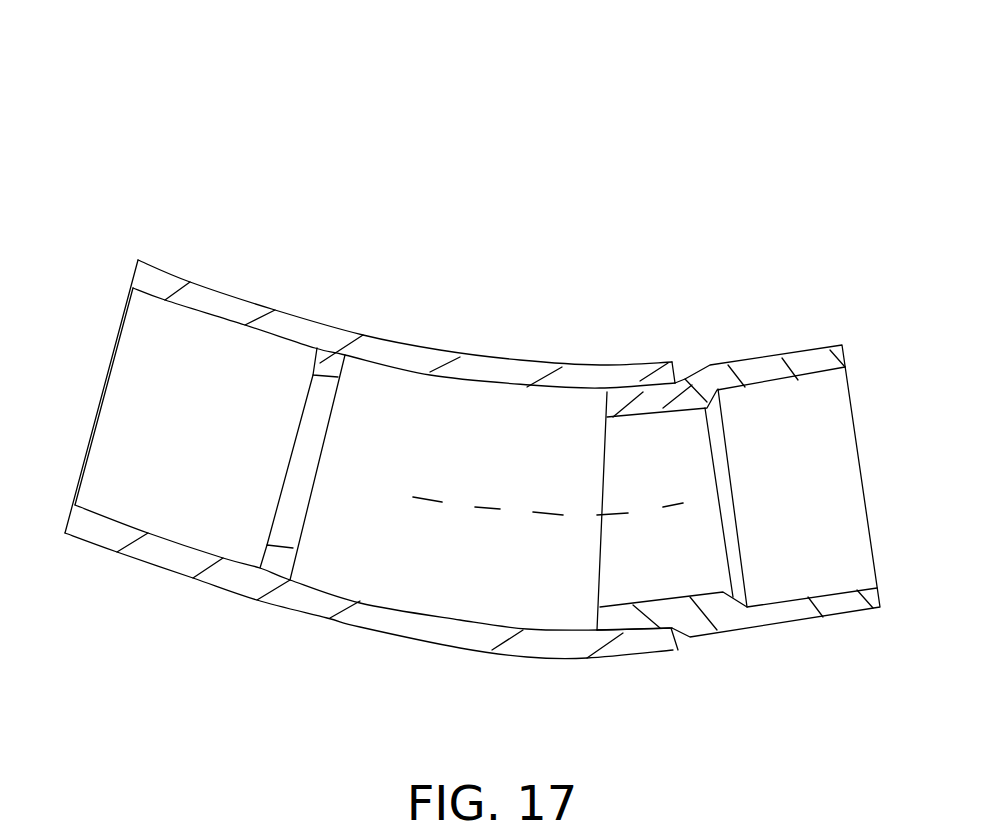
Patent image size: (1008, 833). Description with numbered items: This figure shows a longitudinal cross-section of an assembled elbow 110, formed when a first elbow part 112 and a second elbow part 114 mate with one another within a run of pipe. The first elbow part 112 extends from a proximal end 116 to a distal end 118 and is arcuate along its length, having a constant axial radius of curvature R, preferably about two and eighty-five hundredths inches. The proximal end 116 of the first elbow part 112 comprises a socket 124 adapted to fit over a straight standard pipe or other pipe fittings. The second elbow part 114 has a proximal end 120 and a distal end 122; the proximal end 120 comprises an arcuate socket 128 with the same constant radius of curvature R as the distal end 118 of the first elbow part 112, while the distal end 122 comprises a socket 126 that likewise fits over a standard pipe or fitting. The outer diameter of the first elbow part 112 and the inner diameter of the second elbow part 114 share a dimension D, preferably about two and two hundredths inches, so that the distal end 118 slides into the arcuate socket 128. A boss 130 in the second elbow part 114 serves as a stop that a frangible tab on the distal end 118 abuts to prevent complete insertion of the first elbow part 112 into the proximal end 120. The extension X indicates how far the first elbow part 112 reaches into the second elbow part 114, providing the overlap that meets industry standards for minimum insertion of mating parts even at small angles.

The elbow 110 is at (666, 259).
The first elbow part 112 is at (794, 340).
The second elbow part 114 is at (307, 303).
The proximal end 116 is at (833, 408).
The distal end 118 is at (612, 409).
The proximal end 120 is at (662, 645).
The distal end 122 is at (112, 535).
The socket 124 is at (847, 542).
The socket 126 is at (145, 352).
The arcuate socket 128 is at (568, 572).
The boss 130 is at (278, 558).
The axial radius of curvature R is at (496, 492).
The dimension D is at (224, 334).
The extension X is at (670, 322).